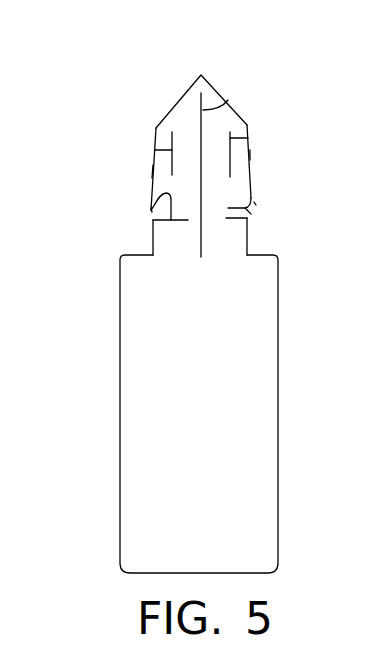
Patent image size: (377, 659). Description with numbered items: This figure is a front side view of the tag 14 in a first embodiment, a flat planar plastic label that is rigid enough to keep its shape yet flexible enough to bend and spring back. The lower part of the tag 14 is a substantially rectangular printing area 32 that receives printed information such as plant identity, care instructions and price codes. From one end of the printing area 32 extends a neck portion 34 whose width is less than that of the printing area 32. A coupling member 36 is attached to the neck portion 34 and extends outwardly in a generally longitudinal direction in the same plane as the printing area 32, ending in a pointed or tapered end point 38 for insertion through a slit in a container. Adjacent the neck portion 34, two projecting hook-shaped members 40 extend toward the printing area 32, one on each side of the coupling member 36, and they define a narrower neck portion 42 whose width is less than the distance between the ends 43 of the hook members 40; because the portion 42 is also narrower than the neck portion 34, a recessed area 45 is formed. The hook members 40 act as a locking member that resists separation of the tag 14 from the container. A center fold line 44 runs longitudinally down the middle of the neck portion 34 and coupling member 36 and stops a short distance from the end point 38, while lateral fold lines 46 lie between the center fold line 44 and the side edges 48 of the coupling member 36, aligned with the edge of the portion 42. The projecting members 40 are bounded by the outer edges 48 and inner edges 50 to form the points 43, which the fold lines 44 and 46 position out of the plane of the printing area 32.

The tag 14 is at (185, 295).
The printing area 32 is at (232, 472).
The neck portion 34 is at (247, 238).
The coupling member 36 is at (197, 144).
The end point 38 is at (201, 75).
The hook-shaped members 40 is at (152, 200).
The neck portion of the coupling member 42 is at (152, 221).
The ends of the hook members 43 is at (152, 208).
The center fold line 44 is at (228, 100).
The recessed area 45 is at (253, 218).
The lateral fold lines 46 is at (155, 150).
The side edges 48 is at (152, 171).
The inner edges 50 is at (245, 206).